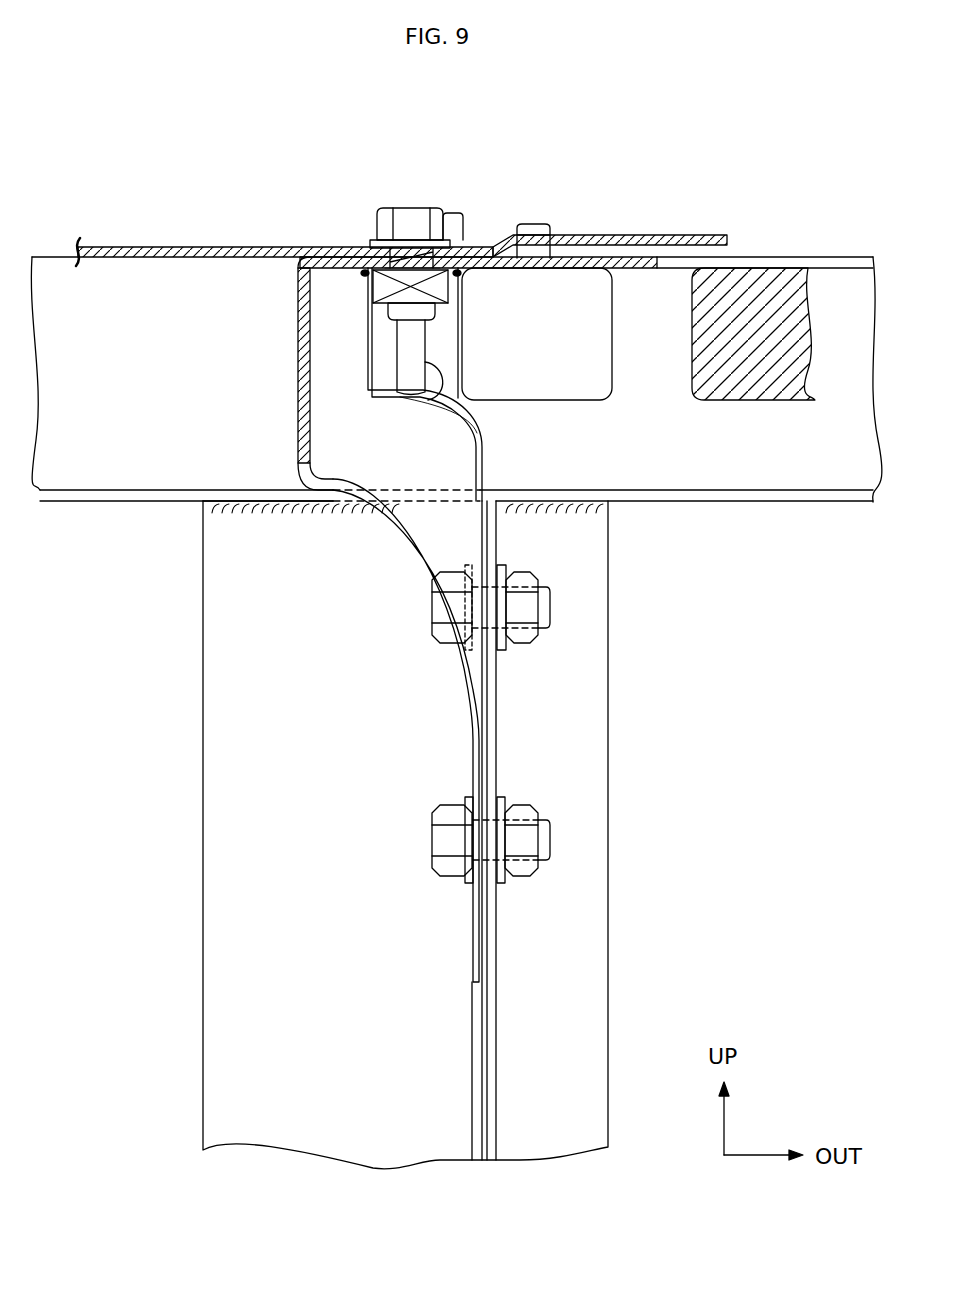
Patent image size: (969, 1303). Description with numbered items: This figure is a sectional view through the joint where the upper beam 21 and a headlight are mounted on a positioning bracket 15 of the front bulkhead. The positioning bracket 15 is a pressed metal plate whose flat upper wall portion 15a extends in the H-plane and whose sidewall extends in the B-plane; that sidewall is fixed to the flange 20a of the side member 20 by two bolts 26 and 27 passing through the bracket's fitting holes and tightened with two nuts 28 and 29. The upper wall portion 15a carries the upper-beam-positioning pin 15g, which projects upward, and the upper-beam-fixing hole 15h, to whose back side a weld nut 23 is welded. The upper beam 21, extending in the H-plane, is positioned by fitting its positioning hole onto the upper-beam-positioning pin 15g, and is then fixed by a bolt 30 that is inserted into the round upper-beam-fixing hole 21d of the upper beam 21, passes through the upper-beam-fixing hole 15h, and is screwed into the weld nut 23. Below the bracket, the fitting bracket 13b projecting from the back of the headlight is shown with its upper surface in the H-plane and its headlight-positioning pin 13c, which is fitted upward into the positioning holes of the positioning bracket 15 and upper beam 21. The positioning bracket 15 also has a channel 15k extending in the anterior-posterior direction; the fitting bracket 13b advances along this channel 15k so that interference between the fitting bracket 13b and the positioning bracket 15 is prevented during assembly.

The fitting bracket 13b is at (553, 392).
The headlight-positioning pin 13c is at (533, 224).
The positioning bracket 15 is at (288, 375).
The upper wall portion 15a is at (603, 236).
The upper-beam-positioning pin 15g is at (466, 222).
The upper-beam-fixing hole 15h is at (395, 272).
The channel 15k is at (435, 385).
The side member 20 is at (622, 730).
The flange 20a is at (491, 935).
The upper beam 21 is at (155, 240).
The upper-beam-fixing hole 21d is at (398, 208).
The weld nut 23 is at (445, 292).
The bolt 26 is at (432, 620).
The bolt 27 is at (444, 843).
The nut 28 is at (520, 578).
The nut 29 is at (520, 810).
The bolt 30 is at (417, 217).